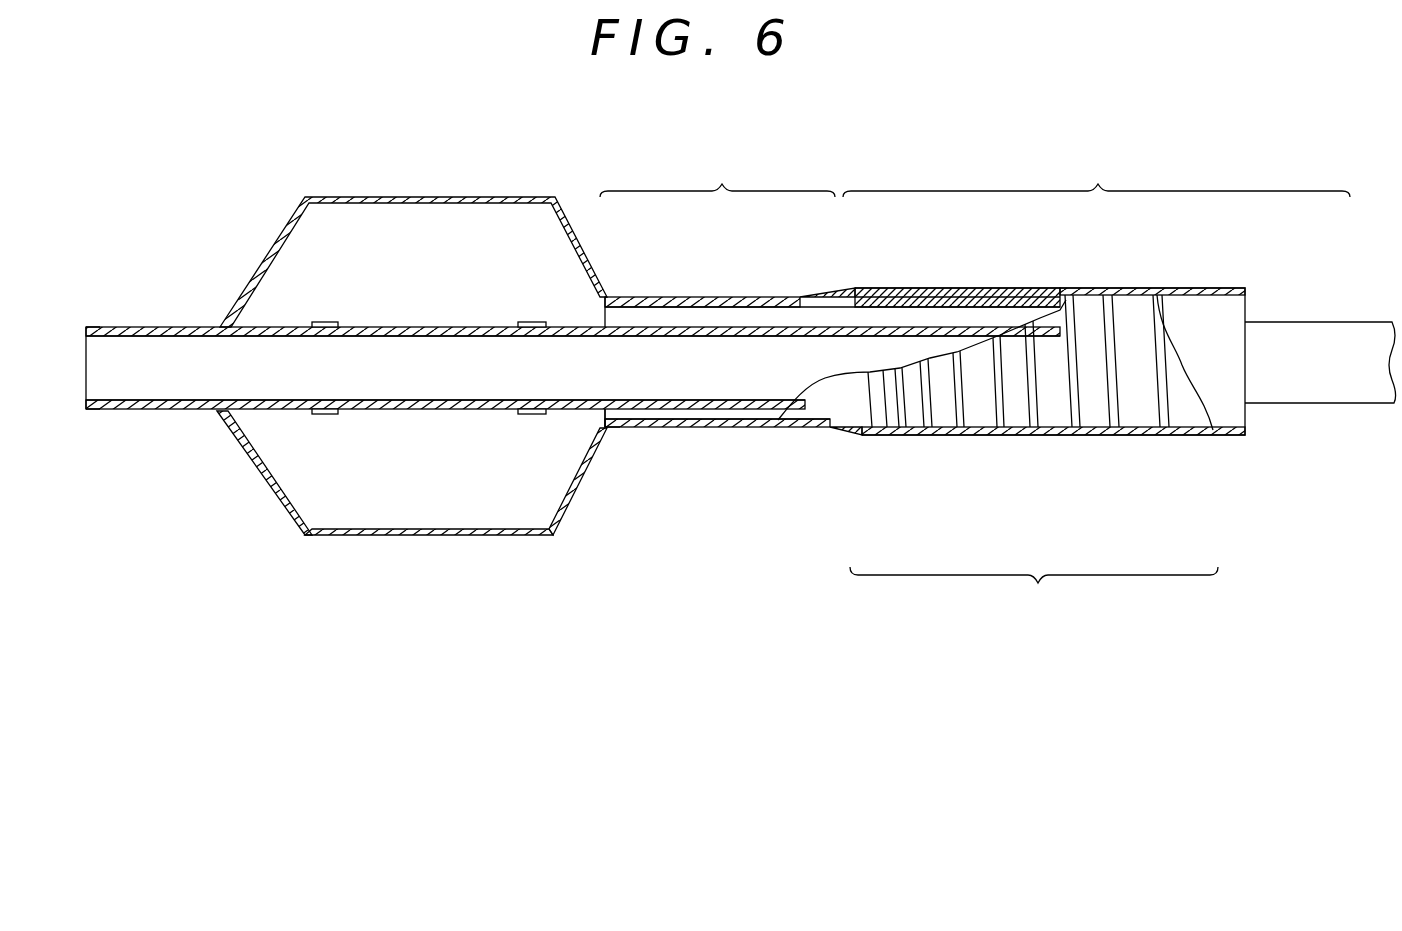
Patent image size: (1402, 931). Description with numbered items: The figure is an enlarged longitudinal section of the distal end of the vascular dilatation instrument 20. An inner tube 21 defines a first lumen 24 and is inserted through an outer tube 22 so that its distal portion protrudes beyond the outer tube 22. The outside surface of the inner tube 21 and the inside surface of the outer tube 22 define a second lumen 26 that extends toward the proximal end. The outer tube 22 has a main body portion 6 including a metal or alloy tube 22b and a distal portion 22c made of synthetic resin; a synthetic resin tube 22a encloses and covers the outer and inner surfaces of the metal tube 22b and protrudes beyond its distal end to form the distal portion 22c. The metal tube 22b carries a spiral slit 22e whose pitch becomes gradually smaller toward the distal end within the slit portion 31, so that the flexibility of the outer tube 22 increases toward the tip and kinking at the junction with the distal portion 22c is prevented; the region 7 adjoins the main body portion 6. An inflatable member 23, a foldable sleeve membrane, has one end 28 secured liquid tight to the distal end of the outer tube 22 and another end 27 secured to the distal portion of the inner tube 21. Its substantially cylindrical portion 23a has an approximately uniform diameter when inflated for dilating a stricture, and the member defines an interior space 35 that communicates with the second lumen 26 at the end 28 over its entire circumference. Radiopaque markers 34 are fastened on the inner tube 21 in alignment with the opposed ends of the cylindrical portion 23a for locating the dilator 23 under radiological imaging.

The vascular dilatation instrument 20 is at (325, 548).
The inner tube 21 is at (265, 327).
The outer tube 22 is at (744, 300).
The synthetic resin tube 22a is at (1043, 295).
The metal or alloy tube 22b is at (1005, 290).
The distal portion 22c is at (833, 297).
The spiral slit 22e is at (950, 295).
The inflatable member 23 is at (532, 197).
The cylindrical portion 23a is at (428, 540).
The first lumen 24 is at (172, 365).
The second lumen 26 is at (654, 315).
The another end 27 is at (178, 418).
The one end 28 is at (612, 430).
The slit portion 31 is at (1034, 597).
The markers 34 is at (327, 320).
The interior space 35 is at (407, 210).
The main body portion 6 is at (1096, 169).
The intermediate portion 7 is at (717, 169).